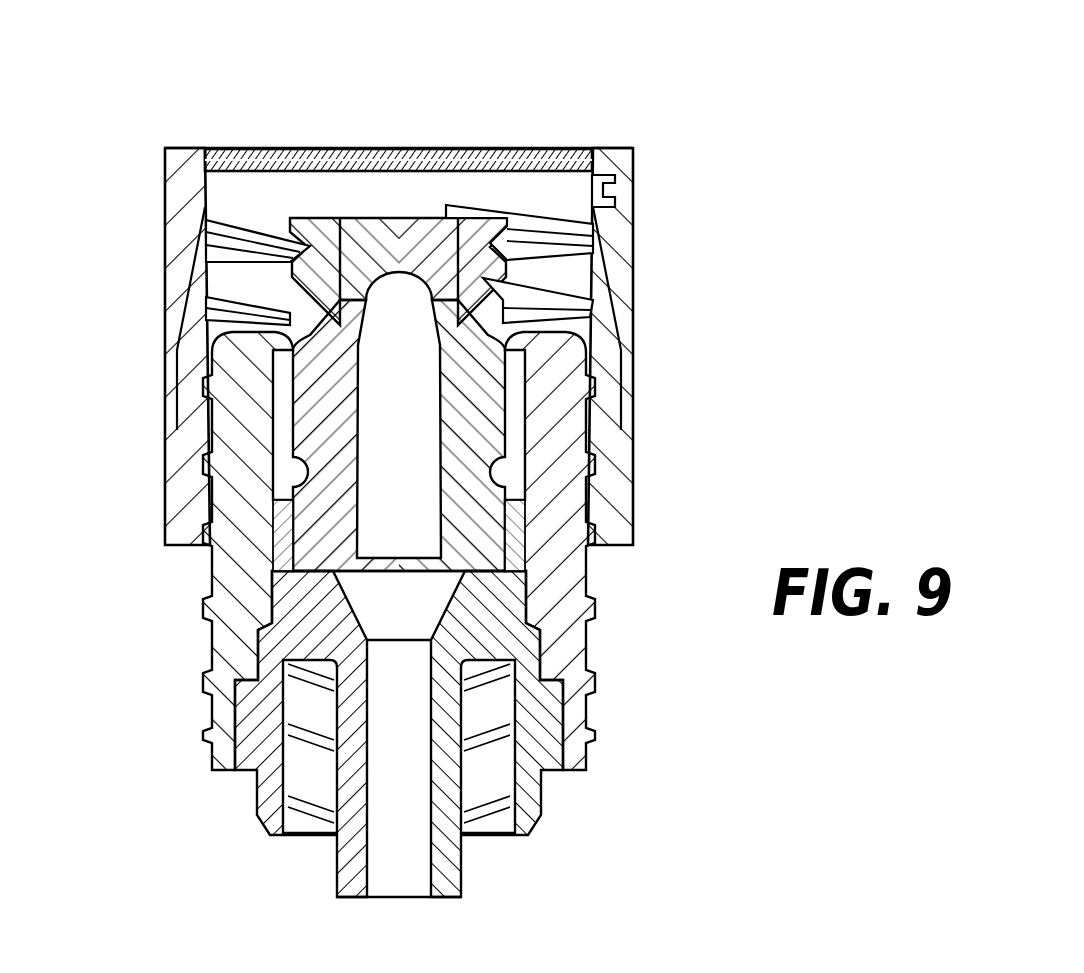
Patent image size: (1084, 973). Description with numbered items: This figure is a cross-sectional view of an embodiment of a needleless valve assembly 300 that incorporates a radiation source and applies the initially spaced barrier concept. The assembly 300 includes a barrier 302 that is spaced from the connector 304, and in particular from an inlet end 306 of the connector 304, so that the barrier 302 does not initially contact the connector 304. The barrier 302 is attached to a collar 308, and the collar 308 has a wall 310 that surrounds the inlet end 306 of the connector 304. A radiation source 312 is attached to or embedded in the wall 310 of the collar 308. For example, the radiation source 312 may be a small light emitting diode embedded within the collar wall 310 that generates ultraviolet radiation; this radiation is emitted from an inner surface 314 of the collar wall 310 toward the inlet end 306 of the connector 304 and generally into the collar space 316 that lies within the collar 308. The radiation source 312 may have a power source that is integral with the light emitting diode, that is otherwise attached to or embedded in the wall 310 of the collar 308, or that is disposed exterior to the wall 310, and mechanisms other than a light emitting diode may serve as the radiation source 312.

The assembly 300 is at (240, 68).
The barrier 302 is at (503, 148).
The connector 304 is at (563, 615).
The inlet end 306 is at (565, 262).
The collar 308 is at (626, 437).
The wall 310 is at (605, 508).
The radiation source 312 is at (606, 194).
The inner surface 314 is at (592, 273).
The collar space 316 is at (272, 209).